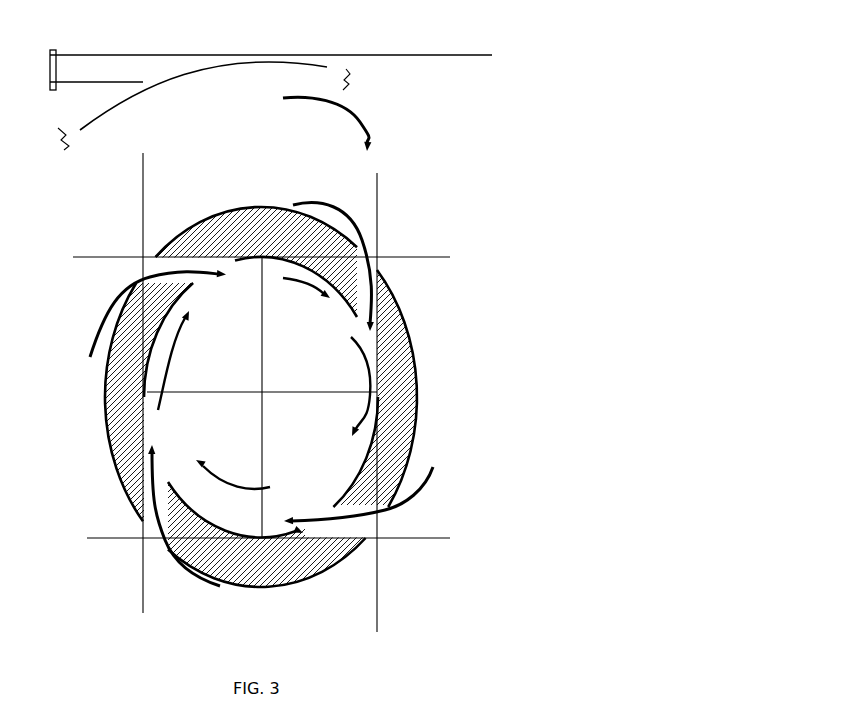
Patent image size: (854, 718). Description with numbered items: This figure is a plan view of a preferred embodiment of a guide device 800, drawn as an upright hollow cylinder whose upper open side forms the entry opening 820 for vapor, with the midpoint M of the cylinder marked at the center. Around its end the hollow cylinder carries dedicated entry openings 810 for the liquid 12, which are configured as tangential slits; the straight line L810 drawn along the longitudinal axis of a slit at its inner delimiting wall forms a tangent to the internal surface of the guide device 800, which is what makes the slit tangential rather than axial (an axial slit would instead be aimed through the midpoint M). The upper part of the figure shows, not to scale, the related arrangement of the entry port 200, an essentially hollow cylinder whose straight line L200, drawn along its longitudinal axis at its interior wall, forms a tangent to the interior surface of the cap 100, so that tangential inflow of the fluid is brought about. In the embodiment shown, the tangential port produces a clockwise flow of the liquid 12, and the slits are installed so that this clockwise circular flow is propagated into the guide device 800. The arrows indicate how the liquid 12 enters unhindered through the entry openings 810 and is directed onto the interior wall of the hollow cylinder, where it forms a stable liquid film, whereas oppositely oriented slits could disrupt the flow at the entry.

The liquid 12 is at (284, 99).
The cap 100 is at (140, 84).
The entry port 200 is at (105, 66).
The guide device 800 is at (407, 292).
The entry opening 810 is at (143, 262).
The entry opening for vapor 820 is at (290, 362).
The midpoint of the hollow cylinder M is at (262, 391).
The straight line along the entry port L200 is at (462, 57).
The straight line along the slit L810 is at (73, 257).